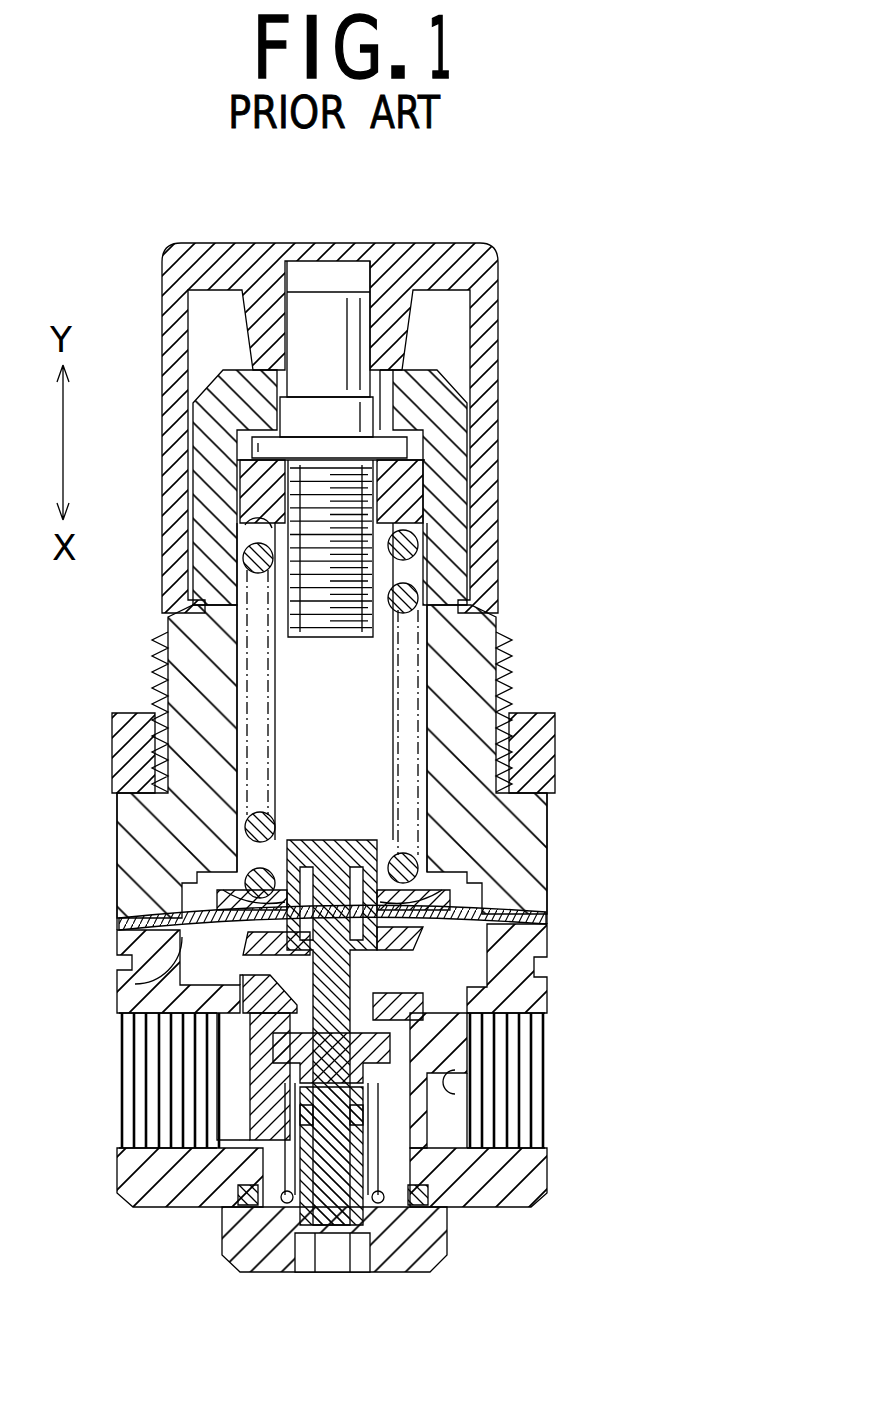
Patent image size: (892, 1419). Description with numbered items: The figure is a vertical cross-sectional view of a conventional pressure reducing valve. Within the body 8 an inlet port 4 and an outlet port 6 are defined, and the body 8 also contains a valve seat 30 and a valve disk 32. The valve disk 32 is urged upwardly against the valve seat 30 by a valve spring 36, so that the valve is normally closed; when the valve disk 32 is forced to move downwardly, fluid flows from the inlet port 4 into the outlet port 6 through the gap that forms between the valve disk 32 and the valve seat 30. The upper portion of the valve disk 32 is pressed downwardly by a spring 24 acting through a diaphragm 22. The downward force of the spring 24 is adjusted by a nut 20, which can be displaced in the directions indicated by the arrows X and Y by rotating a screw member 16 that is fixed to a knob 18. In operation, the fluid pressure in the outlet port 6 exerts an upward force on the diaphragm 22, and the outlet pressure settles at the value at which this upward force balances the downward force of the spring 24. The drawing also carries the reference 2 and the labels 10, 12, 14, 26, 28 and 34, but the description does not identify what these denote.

The pressure regulator 2 is at (581, 229).
The inlet port 4 is at (157, 1128).
The outlet port 6 is at (545, 1120).
The body 8 is at (517, 963).
The outlet chamber 10 is at (443, 968).
The bonnet 12 is at (463, 663).
The bottom plug nut 14 is at (407, 1235).
The screw member 16 is at (340, 565).
The knob 18 is at (392, 248).
The nut 20 is at (415, 493).
The diaphragm 22 is at (135, 965).
The spring 24 is at (245, 552).
The valve stem 26 is at (362, 974).
The valve seat passage 28 is at (287, 1017).
The valve seat 30 is at (405, 1048).
The valve disk 32 is at (440, 907).
The outlet passage 34 is at (455, 1085).
The valve spring 36 is at (280, 1245).